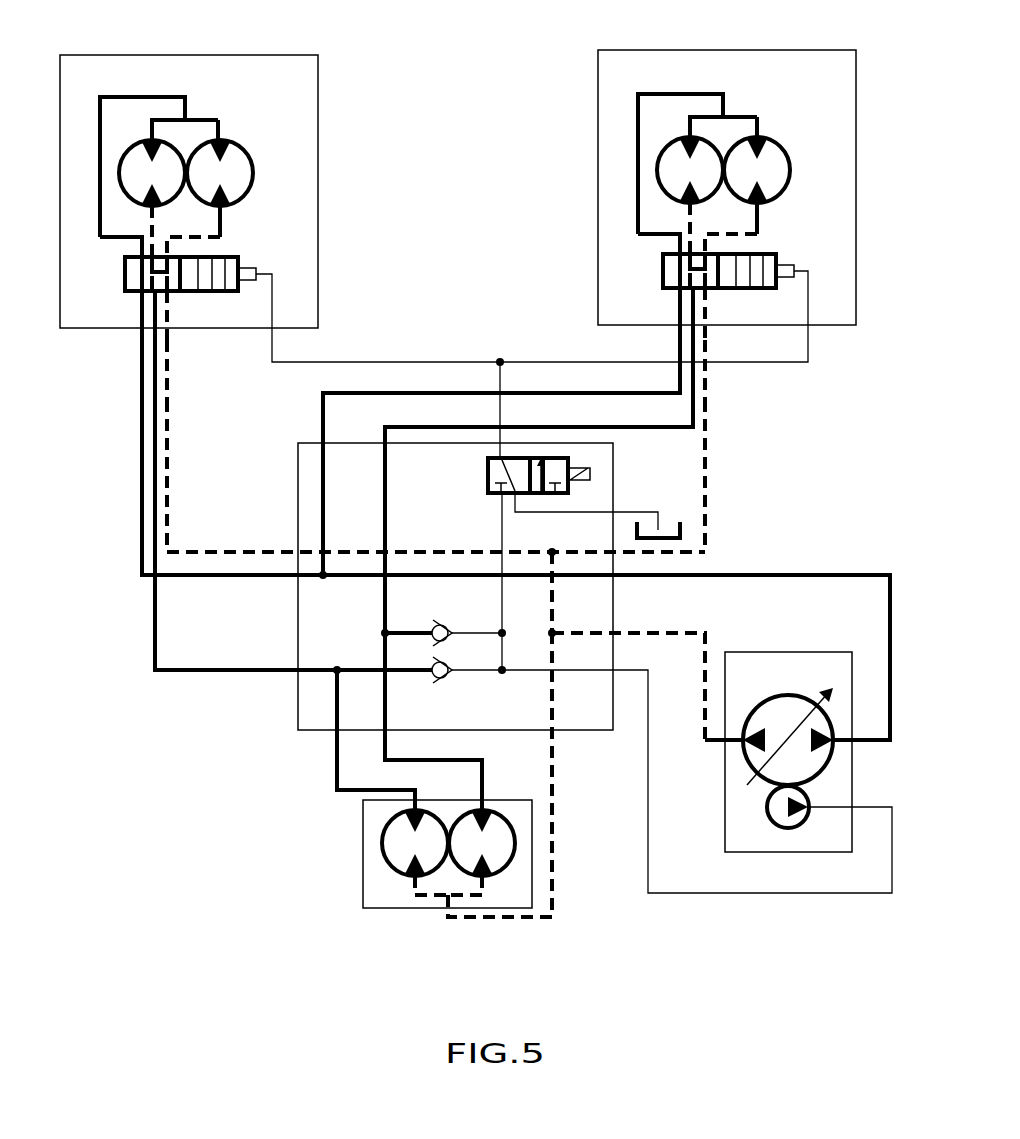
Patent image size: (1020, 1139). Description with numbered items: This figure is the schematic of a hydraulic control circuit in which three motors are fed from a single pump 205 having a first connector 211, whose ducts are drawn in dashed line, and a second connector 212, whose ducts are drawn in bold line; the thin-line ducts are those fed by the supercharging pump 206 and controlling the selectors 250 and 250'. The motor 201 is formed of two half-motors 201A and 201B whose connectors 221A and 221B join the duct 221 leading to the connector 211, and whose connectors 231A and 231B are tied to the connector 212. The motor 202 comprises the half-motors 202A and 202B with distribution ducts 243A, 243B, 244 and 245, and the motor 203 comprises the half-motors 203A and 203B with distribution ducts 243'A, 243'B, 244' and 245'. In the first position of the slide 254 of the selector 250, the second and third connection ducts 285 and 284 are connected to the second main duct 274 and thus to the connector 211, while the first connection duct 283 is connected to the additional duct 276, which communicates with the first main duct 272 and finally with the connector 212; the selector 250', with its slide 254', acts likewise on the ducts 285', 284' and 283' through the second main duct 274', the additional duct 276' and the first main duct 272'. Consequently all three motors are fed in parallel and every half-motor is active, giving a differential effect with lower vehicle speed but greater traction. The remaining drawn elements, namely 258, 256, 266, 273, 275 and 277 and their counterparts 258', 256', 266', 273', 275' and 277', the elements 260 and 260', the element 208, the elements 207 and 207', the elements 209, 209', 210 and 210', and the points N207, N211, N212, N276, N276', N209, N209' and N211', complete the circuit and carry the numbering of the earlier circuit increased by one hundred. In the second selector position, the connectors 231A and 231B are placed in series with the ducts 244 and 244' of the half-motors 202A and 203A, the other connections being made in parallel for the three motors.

The motor 202 is at (282, 75).
The half-motor 202A is at (132, 162).
The hydraulic motor 202B is at (238, 174).
The distribution duct 243A is at (140, 150).
The distribution duct 243B is at (228, 150).
The distribution duct 244 is at (101, 191).
The distribution duct 245 is at (299, 200).
The first connection duct 283 is at (136, 121).
The third connection duct 284 is at (93, 237).
The second connection duct 285 is at (304, 227).
The hydraulic line 258 is at (186, 231).
The selector 250 is at (267, 280).
The solenoid valve 254 is at (121, 282).
The valve spring 260 is at (230, 276).
The hydraulic line 256 is at (108, 329).
The pilot line 266 is at (378, 318).
The first main duct 272 is at (120, 356).
The hydraulic line 273 is at (205, 452).
The second main duct 274 is at (206, 327).
The drain line 275 is at (436, 476).
The additional duct 276 is at (205, 370).
The hydraulic line 277 is at (285, 605).
The motor 203 is at (820, 70).
The half-motor 203A is at (670, 168).
The hydraulic motor 203B is at (775, 172).
The distribution duct 243'A is at (713, 86).
The distribution duct 243'B is at (833, 126).
The distribution duct 244' is at (616, 200).
The distribution duct 245' is at (833, 190).
The first connection duct 283' is at (674, 118).
The third connection duct 284' is at (621, 235).
The second connection duct 285' is at (834, 227).
The hydraulic line 258' is at (723, 228).
The selector 250' is at (794, 277).
The solenoid valve 254' is at (660, 279).
The valve spring 260' is at (765, 273).
The hydraulic line 256' is at (646, 327).
The pilot line 266' is at (654, 316).
The first main duct 272' is at (650, 344).
The hydraulic line 273' is at (501, 452).
The second main duct 274' is at (755, 343).
The drain line 275' is at (750, 476).
The additional duct 276' is at (739, 383).
The hydraulic line 277' is at (539, 605).
The node N207 is at (500, 358).
The directional control valve 208 is at (470, 466).
The reservoir 207' is at (605, 501).
The node N211 is at (583, 573).
The node N212 is at (320, 578).
The node N276 is at (288, 656).
The node N276' is at (350, 636).
The hydraulic line 209 is at (386, 693).
The hydraulic line 209' is at (410, 611).
The check valve 210 is at (467, 684).
The check valve 210' is at (468, 645).
The node N209 is at (521, 687).
The node N209' is at (471, 628).
The node N211' is at (584, 653).
The pump 205 is at (781, 711).
The supercharging pump 206 is at (790, 830).
The reservoir line 207 is at (697, 806).
The first connector 211 is at (752, 752).
The second connector 212 is at (828, 748).
The motor 201 is at (372, 888).
The hydraulic motor 201A is at (395, 850).
The hydraulic motor 201B is at (502, 846).
The connector 231A is at (402, 820).
The connector 231B is at (492, 820).
The connector 221A is at (403, 873).
The connector 221B is at (492, 868).
The duct 221 is at (540, 920).